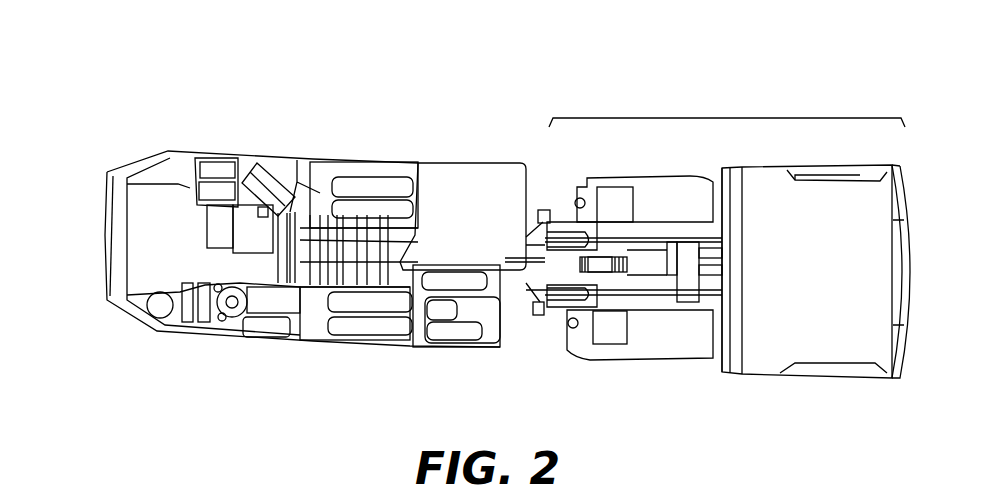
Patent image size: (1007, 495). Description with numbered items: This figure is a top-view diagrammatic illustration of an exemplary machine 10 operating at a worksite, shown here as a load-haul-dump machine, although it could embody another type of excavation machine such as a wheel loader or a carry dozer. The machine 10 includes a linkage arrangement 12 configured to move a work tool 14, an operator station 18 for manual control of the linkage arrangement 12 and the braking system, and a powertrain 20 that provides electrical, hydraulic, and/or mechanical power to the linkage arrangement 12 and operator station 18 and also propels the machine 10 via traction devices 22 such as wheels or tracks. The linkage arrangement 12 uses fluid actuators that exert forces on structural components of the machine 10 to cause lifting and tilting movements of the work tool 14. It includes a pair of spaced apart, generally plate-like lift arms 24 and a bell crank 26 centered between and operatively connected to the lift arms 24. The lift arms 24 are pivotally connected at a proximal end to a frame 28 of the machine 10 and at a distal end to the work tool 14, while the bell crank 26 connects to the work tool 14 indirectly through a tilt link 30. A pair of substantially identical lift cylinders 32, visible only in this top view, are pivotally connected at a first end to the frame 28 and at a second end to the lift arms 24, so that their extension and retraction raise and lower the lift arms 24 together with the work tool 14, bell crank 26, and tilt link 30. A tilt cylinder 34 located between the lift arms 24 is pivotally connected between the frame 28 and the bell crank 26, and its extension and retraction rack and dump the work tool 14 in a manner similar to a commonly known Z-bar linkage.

The machine 10 is at (66, 88).
The linkage arrangement 12 is at (708, 118).
The work tool 14 is at (824, 264).
The operator station 18 is at (477, 218).
The powertrain 20 is at (167, 247).
The traction devices 22 is at (347, 160).
The lift arms 24 is at (706, 182).
The bell crank 26 is at (730, 238).
The frame 28 is at (517, 272).
The tilt link 30 is at (723, 268).
The lift cylinders 32 is at (607, 202).
The tilt cylinder 34 is at (647, 250).